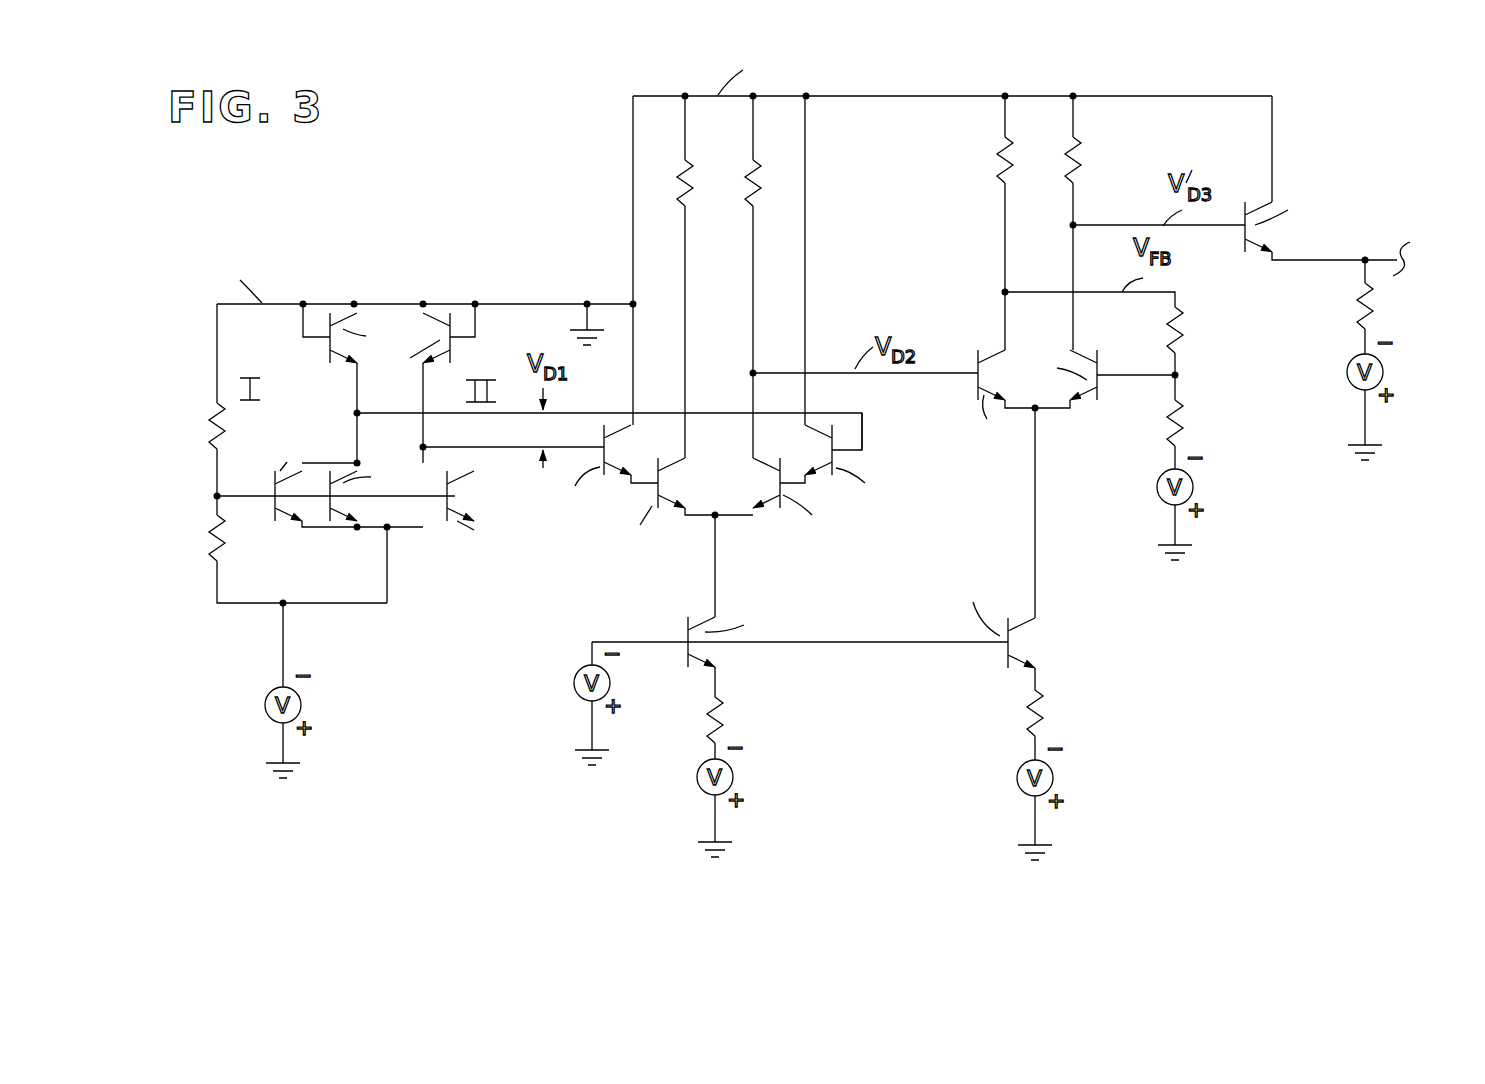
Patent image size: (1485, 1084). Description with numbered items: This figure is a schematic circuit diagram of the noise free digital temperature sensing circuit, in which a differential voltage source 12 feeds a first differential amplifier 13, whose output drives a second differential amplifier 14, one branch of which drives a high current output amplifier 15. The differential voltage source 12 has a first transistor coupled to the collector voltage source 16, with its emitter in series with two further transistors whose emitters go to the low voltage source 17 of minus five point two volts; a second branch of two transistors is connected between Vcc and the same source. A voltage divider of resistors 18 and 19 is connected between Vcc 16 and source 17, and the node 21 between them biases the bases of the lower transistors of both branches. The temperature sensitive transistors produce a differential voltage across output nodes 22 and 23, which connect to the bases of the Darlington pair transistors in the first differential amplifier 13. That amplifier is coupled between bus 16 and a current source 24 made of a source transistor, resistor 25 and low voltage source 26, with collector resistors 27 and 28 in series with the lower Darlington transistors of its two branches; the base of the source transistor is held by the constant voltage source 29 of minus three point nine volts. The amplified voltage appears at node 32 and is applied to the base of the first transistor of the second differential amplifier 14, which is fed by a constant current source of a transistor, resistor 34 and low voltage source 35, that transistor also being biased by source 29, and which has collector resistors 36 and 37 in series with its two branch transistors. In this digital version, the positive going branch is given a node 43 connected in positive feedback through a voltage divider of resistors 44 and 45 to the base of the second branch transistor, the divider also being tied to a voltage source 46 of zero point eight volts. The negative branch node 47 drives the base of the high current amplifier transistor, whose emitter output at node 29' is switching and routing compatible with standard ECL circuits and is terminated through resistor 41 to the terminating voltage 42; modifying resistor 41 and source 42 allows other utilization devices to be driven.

The differential voltage source 12 is at (338, 255).
The first differential amplifier 13 is at (877, 80).
The second differential amplifier 14 is at (1135, 80).
The high current output amplifier 15 is at (1318, 130).
The collector voltage source Vcc 16 is at (392, 302).
The low voltage source 17 is at (265, 706).
The resistor 18 is at (212, 433).
The resistor 19 is at (210, 550).
The node 21 is at (212, 496).
The output node 22 is at (352, 411).
The output node 23 is at (421, 446).
The current source 24 is at (775, 590).
The resistor 25 is at (722, 703).
The low voltage source 26 is at (695, 777).
The collector resistor 27 is at (680, 178).
The collector resistor 28 is at (748, 178).
The constant voltage source 29 is at (571, 703).
The output node 29' is at (1389, 235).
The node 32 is at (750, 372).
The resistor 34 is at (1040, 720).
The low voltage source 35 is at (1013, 778).
The collector resistor 36 is at (997, 154).
The collector resistor 37 is at (1065, 160).
The resistor 41 is at (1355, 305).
The terminating voltage 42 is at (1347, 370).
The node 43 is at (1010, 290).
The resistor 44 is at (1185, 345).
The resistor 45 is at (1183, 415).
The voltage source 46 is at (1157, 487).
The node 47 is at (1075, 224).